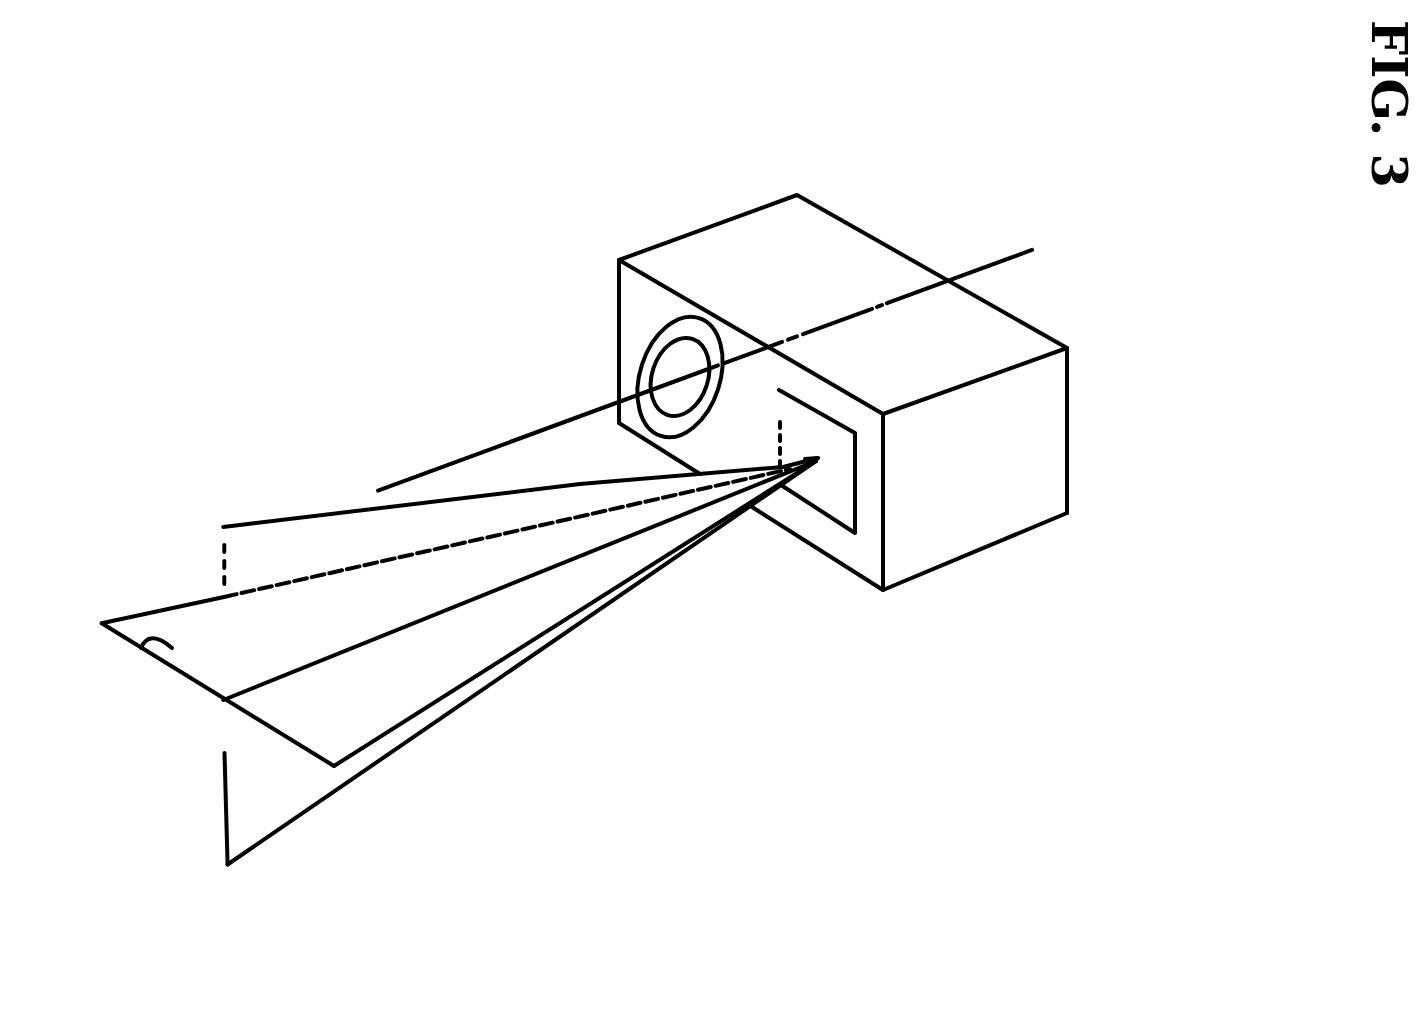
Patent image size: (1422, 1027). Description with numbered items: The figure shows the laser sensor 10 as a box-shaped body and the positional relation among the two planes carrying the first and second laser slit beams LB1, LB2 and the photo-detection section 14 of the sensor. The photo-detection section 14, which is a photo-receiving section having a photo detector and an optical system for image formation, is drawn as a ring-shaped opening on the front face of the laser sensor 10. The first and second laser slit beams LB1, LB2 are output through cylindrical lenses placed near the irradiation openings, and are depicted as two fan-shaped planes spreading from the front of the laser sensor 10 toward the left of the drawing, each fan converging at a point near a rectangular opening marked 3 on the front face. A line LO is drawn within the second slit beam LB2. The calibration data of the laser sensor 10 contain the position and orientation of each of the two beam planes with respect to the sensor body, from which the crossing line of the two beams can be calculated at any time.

The laser sensor 10 is at (735, 245).
The photo-detection section 14 is at (660, 390).
The light receiving element 3 is at (828, 493).
The first laser slit beam LB1 is at (260, 550).
The second laser slit beam LB2 is at (142, 657).
The beam center line LO is at (433, 616).